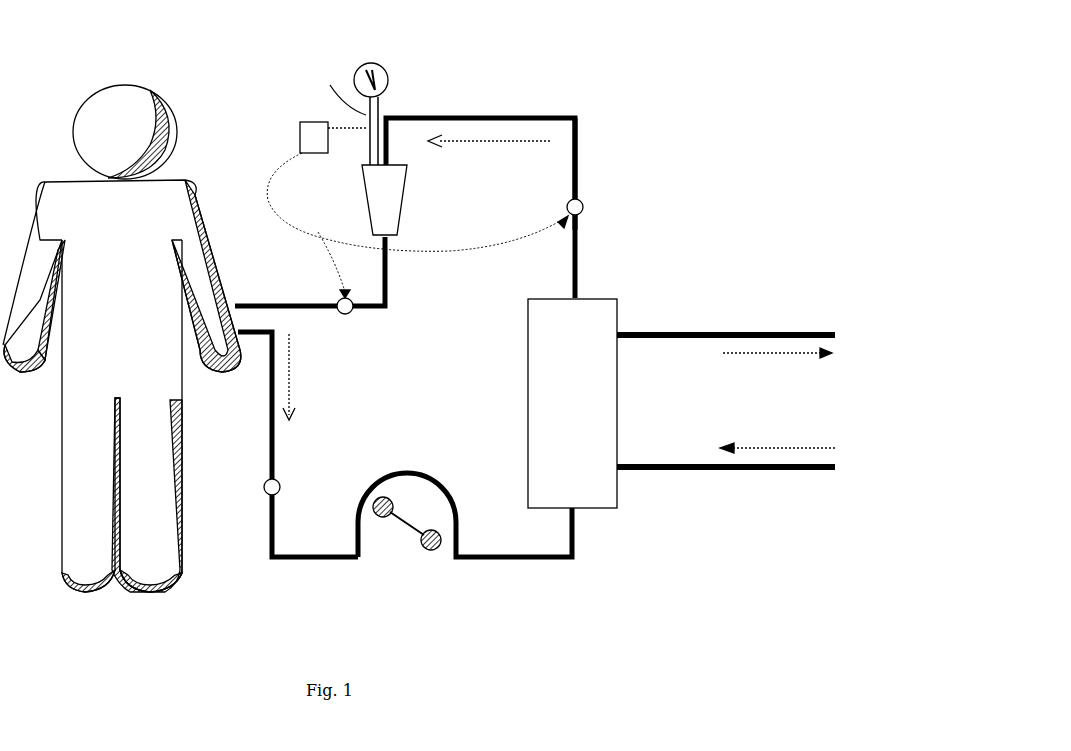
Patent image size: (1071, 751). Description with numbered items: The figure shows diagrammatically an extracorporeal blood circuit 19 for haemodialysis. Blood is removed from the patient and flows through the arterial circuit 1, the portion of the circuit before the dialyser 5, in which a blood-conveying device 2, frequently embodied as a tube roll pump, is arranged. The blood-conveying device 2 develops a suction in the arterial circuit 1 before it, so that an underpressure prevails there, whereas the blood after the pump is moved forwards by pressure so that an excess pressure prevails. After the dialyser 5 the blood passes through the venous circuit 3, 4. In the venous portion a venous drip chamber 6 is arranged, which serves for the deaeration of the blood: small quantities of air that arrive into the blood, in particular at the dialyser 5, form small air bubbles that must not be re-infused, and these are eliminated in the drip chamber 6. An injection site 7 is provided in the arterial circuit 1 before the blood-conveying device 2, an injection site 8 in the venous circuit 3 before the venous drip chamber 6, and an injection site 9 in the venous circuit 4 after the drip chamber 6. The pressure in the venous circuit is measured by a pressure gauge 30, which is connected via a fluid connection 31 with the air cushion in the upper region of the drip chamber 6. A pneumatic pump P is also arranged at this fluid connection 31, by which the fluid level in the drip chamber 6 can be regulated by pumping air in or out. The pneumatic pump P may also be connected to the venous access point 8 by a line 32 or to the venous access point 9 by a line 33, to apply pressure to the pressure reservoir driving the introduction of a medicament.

The arterial circuit 1 is at (298, 444).
The blood-conveying device 2 is at (465, 528).
The venous circuit 3 is at (480, 192).
The venous circuit 4 is at (310, 271).
The dialyser 5 is at (681, 403).
The venous drip chamber 6 is at (391, 166).
The injection site 7 is at (280, 485).
The injection site 8 is at (583, 204).
The injection site 9 is at (345, 315).
The extracorporeal blood circuit 19 is at (585, 140).
The pressure gauge 30 is at (384, 67).
The fluid connection 31 is at (336, 89).
The line 32 is at (500, 257).
The line 33 is at (334, 253).
The pneumatic pump P is at (334, 137).